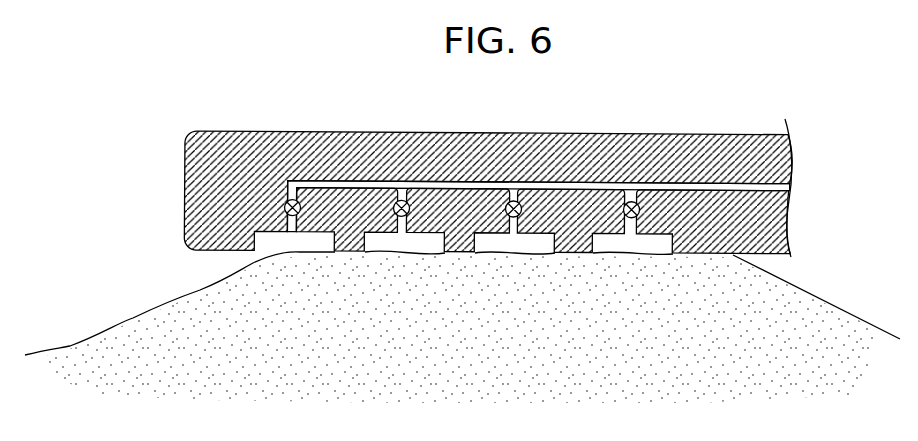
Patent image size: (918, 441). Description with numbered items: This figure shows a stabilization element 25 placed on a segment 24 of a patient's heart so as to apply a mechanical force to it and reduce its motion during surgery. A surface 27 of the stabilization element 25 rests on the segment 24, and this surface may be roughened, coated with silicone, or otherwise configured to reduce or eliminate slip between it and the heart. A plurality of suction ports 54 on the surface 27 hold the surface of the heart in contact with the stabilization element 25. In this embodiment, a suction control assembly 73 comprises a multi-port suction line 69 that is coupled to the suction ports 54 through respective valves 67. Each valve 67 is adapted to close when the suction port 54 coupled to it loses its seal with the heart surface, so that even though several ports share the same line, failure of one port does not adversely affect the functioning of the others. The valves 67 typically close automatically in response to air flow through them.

The stabilization element 25 is at (525, 180).
The suction control assembly 73 is at (682, 151).
The multi-port suction line 69 is at (368, 182).
The valve 67 is at (278, 203).
The suction port 54 is at (597, 245).
The surface 27 is at (791, 257).
The segment 24 is at (480, 328).